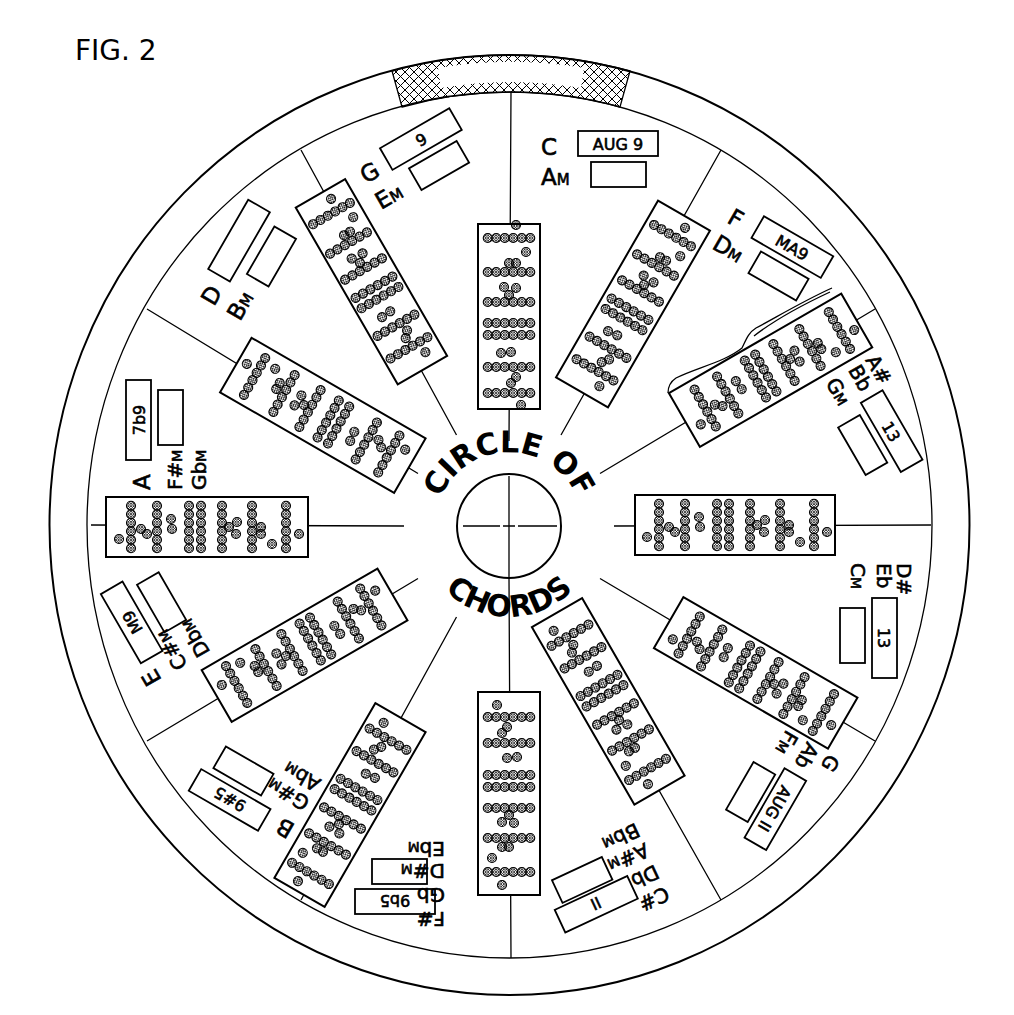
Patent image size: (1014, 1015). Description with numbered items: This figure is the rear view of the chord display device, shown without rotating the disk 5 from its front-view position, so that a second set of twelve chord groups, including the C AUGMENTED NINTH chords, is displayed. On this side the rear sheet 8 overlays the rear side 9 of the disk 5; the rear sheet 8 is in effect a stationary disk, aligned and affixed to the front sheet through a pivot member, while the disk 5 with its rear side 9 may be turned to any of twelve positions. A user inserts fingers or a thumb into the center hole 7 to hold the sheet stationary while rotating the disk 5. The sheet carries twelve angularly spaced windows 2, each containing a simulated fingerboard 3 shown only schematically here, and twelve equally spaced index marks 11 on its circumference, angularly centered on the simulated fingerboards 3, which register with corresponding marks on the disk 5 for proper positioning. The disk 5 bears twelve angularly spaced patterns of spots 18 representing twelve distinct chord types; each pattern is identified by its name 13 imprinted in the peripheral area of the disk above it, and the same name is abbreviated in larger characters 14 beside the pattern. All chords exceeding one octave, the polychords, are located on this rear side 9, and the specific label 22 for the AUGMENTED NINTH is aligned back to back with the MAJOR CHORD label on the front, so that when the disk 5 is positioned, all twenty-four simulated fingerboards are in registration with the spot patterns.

The window 2 is at (853, 303).
The simulated fingerboard 3 is at (747, 327).
The disk 5 is at (281, 114).
The center hole 7 is at (496, 526).
The rear sheet 8 is at (270, 162).
The rear side 9 is at (332, 108).
The index mark 11 is at (163, 320).
The name 13 is at (688, 210).
The abbreviated name characters 14 is at (240, 237).
The spot 18 is at (287, 875).
The label 22 is at (450, 64).